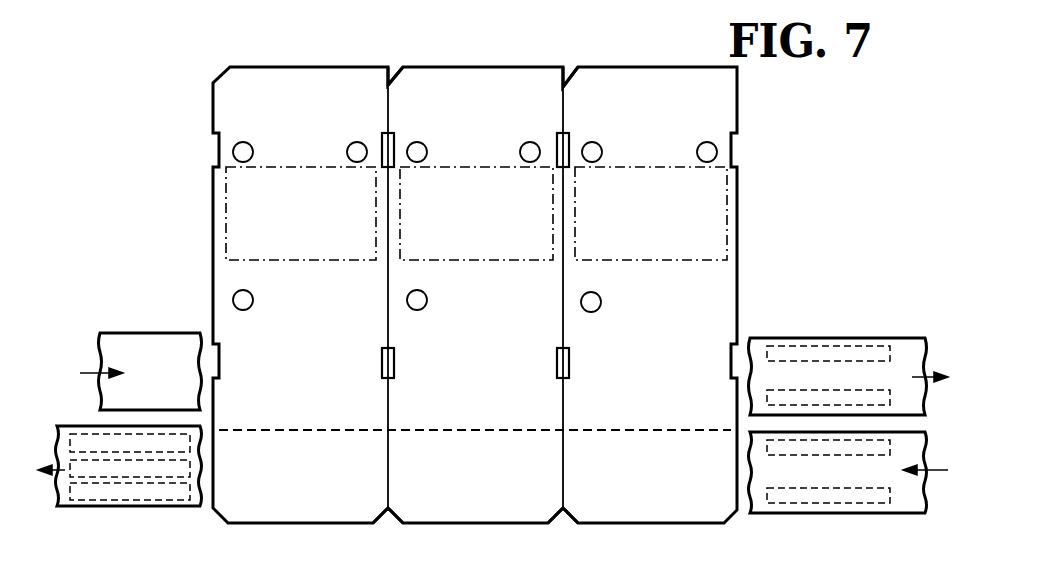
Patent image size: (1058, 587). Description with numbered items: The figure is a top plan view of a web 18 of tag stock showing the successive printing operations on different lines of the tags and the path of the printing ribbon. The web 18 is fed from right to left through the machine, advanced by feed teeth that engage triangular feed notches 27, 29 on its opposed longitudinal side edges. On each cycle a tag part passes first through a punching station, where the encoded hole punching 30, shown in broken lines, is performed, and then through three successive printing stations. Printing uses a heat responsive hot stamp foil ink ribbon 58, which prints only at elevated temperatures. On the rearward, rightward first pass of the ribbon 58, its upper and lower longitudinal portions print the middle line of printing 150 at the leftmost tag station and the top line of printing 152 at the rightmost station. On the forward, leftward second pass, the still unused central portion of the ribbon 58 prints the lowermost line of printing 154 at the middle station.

The web 18 is at (632, 62).
The feed notch 27 is at (392, 80).
The feed notch 29 is at (390, 518).
The punched area 30 is at (309, 225).
The hot stamp foil ink ribbon 58 is at (152, 342).
The middle line of printing 150 is at (357, 396).
The top line of printing 152 is at (704, 320).
The lowermost line of printing 154 is at (532, 470).